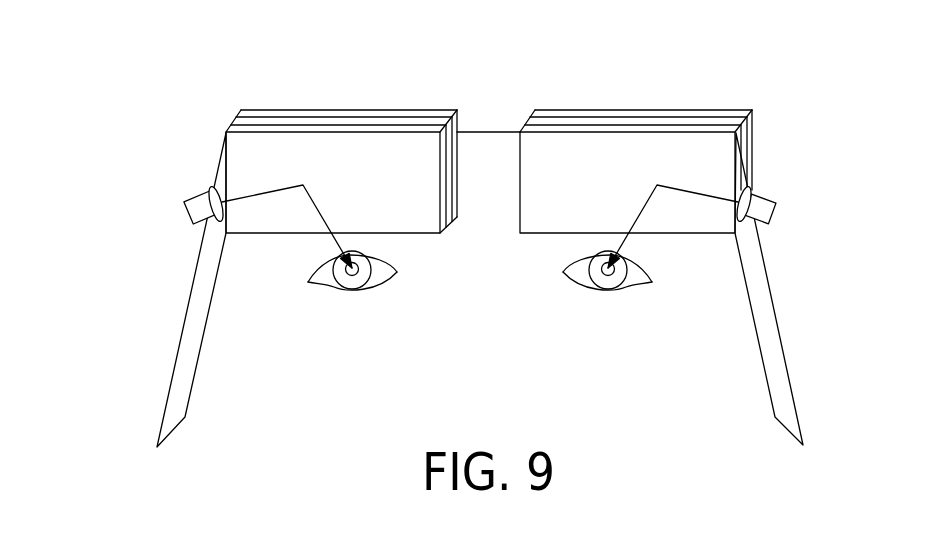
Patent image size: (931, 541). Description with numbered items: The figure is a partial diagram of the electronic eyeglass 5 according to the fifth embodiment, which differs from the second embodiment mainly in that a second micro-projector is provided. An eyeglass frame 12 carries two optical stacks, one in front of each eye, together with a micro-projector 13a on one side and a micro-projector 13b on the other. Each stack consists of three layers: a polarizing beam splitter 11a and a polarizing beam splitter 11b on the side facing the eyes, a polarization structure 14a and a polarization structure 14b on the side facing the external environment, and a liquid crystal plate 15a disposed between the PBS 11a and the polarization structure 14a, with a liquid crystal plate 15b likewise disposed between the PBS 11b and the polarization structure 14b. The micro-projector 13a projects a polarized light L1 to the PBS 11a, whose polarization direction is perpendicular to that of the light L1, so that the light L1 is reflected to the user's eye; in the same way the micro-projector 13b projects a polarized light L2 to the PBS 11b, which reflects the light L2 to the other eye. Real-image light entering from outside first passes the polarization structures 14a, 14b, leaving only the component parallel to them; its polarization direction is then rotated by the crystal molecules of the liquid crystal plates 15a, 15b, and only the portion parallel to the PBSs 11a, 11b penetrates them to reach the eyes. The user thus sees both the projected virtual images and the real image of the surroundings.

The electronic eyeglass 5 is at (53, 28).
The polarizing beam splitter 11a is at (230, 129).
The polarizing beam splitter 11b is at (732, 130).
The eyeglass frame 12 is at (767, 333).
The micro-projector 13a is at (193, 200).
The micro-projector 13b is at (785, 177).
The polarization structure 14a is at (255, 112).
The polarization structure 14b is at (713, 112).
The liquid crystal plate 15a is at (236, 122).
The liquid crystal plate 15b is at (731, 121).
The polarized light L1 is at (293, 226).
The polarized light L2 is at (665, 226).